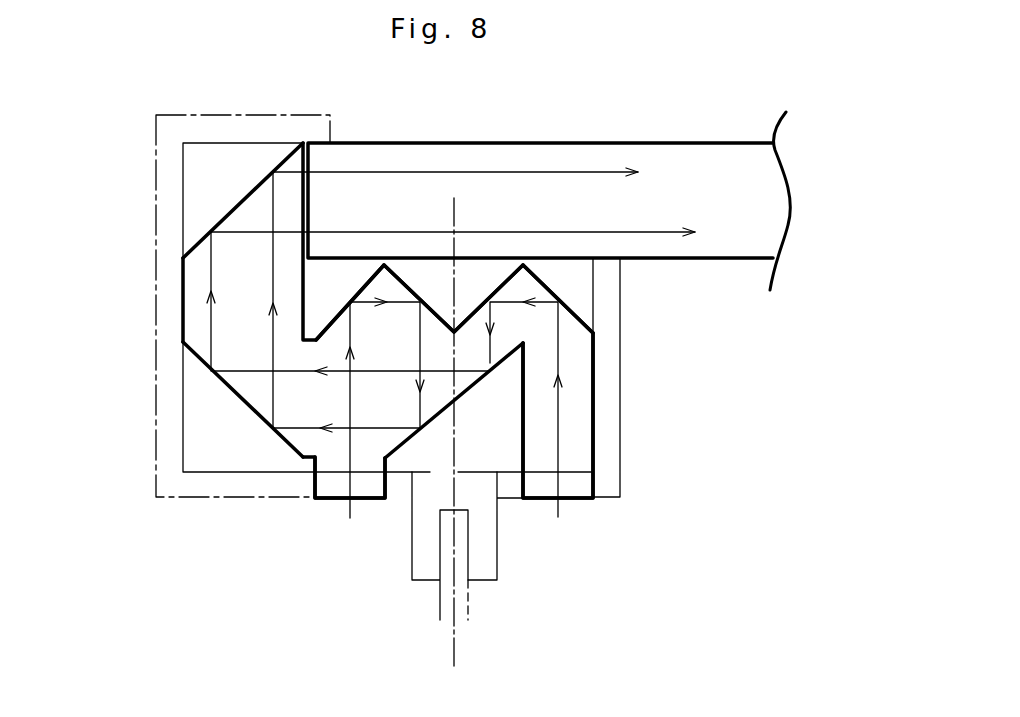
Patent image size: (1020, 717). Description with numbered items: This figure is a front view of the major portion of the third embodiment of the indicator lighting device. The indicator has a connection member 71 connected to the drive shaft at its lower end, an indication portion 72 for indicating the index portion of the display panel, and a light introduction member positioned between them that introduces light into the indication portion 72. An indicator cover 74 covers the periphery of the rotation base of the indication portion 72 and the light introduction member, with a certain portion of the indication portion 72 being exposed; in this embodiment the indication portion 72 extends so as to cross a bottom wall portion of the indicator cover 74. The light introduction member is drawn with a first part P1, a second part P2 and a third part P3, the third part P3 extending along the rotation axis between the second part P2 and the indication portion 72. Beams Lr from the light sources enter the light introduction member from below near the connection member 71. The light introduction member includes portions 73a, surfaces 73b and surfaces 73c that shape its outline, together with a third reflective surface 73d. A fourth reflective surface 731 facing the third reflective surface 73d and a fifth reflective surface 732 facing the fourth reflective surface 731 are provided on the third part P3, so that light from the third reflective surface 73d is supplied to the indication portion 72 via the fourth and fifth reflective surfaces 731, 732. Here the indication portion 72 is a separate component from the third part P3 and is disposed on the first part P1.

The connection member 71 is at (505, 547).
The indication portion 72 is at (678, 115).
The leg portion 73a is at (327, 498).
The outer inclined surface 73b is at (370, 288).
The inner inclined surface 73c is at (407, 288).
The third reflective surface 73d is at (440, 414).
The fourth reflective surface 731 is at (238, 398).
The fifth reflective surface 732 is at (235, 205).
The indicator cover 74 is at (150, 185).
The first part P1 is at (575, 293).
The second part P2 is at (483, 397).
The third part P3 is at (170, 300).
The beam Lr is at (455, 535).